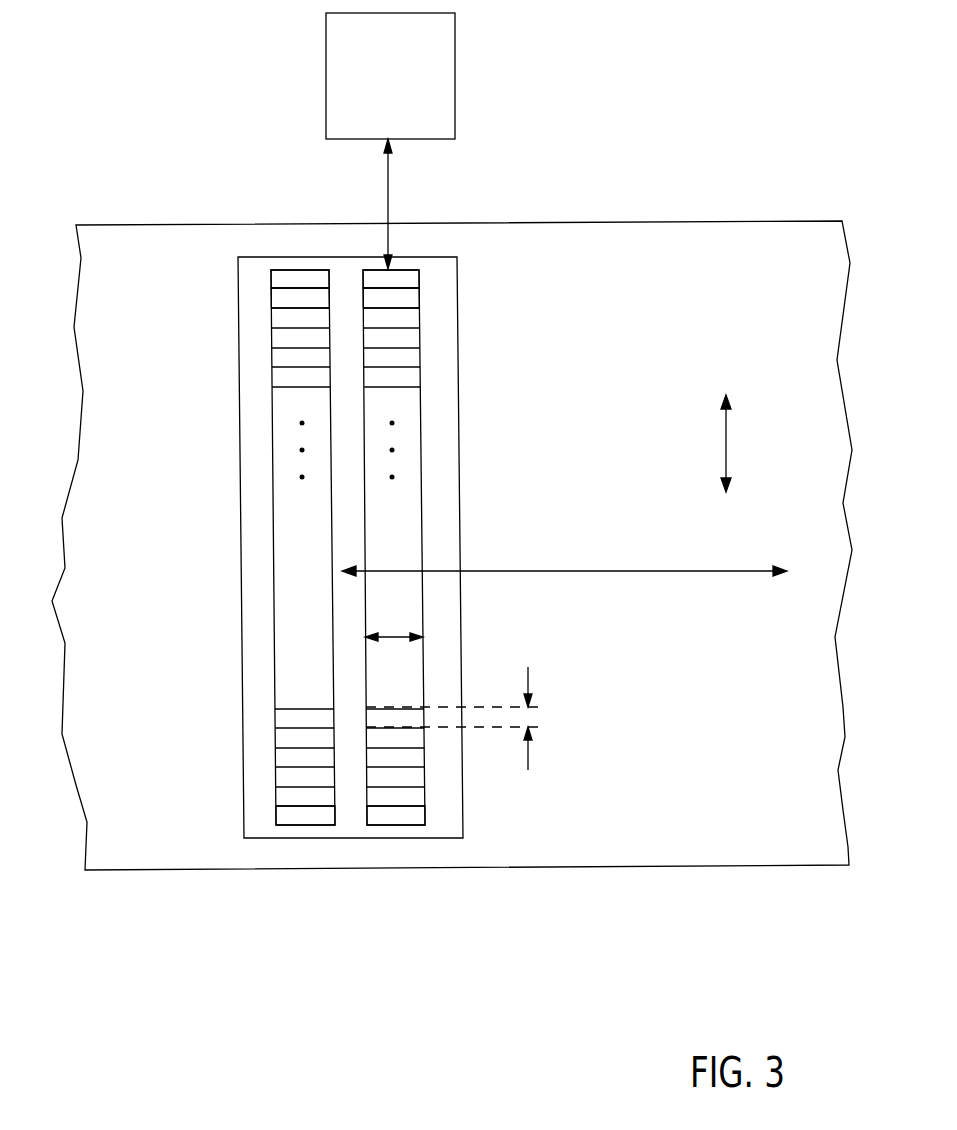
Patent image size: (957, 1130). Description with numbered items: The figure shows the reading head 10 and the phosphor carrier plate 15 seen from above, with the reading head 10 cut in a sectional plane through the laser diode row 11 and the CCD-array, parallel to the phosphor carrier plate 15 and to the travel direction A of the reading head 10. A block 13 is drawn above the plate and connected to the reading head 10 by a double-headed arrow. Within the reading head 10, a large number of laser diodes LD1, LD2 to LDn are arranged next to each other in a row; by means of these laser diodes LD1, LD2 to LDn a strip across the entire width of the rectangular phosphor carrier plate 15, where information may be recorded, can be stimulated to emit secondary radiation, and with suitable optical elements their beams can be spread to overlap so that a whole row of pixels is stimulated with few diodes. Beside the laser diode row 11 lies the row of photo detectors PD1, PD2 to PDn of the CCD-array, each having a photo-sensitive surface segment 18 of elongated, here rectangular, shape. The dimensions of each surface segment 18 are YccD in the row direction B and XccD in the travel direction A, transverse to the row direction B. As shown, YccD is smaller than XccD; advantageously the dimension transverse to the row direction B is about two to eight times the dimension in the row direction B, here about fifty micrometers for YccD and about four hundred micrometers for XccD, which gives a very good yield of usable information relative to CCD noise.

The reading head 10 is at (478, 423).
The laser diode row 11 is at (282, 598).
The control unit 13 is at (445, 58).
The phosphor carrier plate 15 is at (610, 240).
The photo-sensitive surface segment 18 is at (412, 512).
The laser diode LD1 is at (280, 279).
The laser diode LD2 is at (280, 303).
The laser diode LDn is at (285, 818).
The photo detector PD1 is at (413, 276).
The photo detector PD2 is at (413, 298).
The photo detector PDn is at (417, 816).
The travel direction A is at (645, 562).
The row direction B is at (727, 440).
The dimension XCCD XccD is at (392, 633).
The dimension YCCD YccD is at (527, 720).